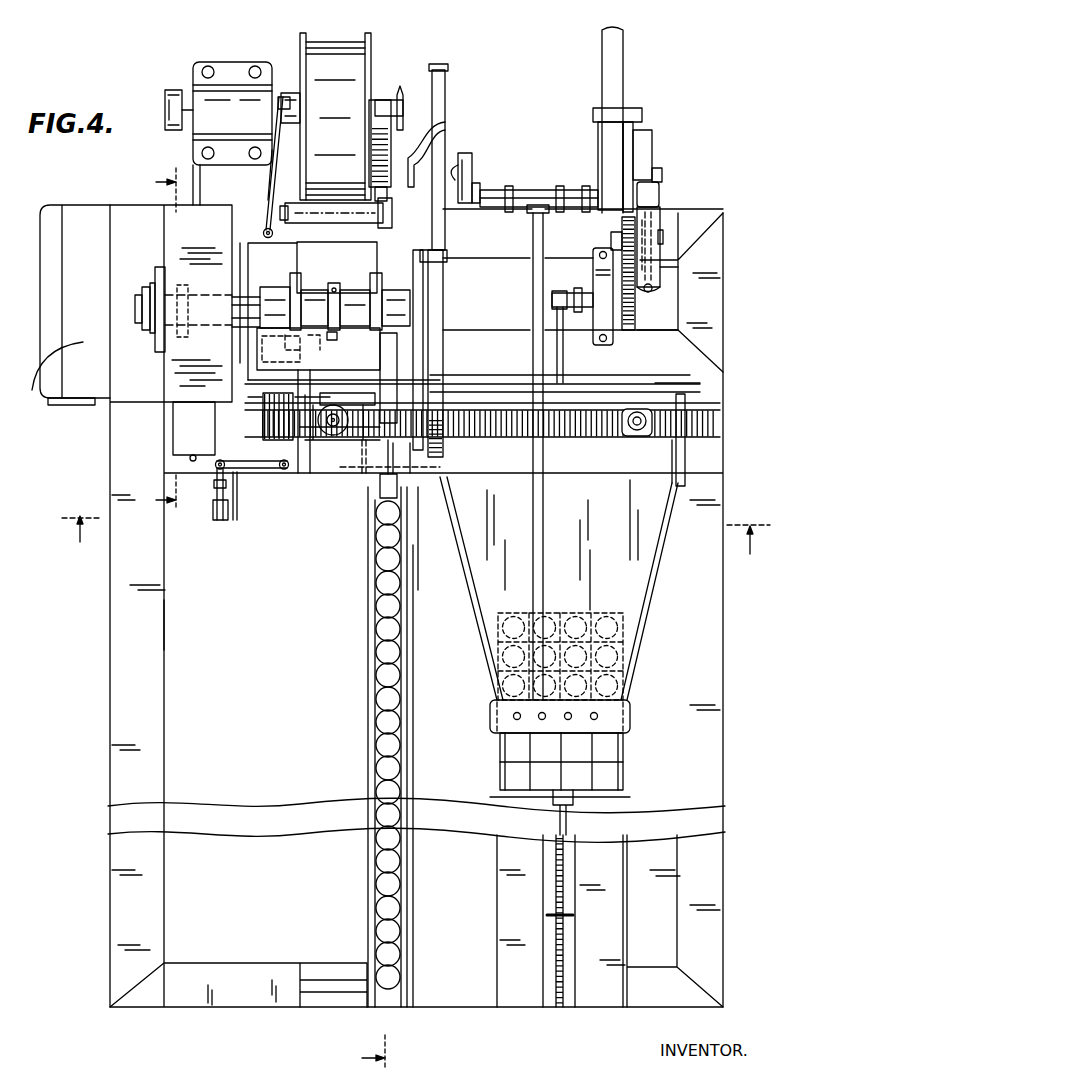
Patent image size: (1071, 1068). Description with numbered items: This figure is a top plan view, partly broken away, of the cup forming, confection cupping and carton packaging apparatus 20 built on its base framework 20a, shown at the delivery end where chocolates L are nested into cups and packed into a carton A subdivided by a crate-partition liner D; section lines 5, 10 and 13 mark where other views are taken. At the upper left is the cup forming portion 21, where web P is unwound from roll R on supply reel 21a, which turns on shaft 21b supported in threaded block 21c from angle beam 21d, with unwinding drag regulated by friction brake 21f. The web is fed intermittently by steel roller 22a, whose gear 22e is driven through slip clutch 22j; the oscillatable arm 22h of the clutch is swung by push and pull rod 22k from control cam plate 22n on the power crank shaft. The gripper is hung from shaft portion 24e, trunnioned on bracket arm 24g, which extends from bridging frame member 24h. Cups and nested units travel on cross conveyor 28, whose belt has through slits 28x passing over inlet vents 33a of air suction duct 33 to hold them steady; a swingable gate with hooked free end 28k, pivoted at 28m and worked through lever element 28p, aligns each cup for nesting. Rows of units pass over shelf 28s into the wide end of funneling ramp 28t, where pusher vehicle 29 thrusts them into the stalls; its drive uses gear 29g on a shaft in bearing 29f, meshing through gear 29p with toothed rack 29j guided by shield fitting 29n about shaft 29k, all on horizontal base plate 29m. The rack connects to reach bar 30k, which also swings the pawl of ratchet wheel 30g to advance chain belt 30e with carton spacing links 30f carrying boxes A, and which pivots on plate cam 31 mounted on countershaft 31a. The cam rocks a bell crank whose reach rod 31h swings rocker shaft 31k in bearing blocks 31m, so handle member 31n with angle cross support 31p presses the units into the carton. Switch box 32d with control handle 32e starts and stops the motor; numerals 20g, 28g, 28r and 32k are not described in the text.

The cup forming, confection cupping and carton packaging apparatus 20 is at (97, 204).
The base framework 20a is at (166, 628).
The frame bracket 20g is at (168, 410).
The cup forming portion 21 is at (277, 471).
The supply reel 21a is at (369, 78).
The shaft 21b is at (281, 97).
The threaded block 21c is at (202, 82).
The angle beam 21d is at (200, 197).
The friction brake 21f is at (268, 185).
The steel roller 22a is at (331, 232).
The gear 22e is at (386, 222).
The oscillatable arm 22h is at (448, 127).
The slip clutch 22j is at (380, 204).
The push and pull rod 22k is at (447, 88).
The control cam plate 22n is at (445, 246).
The shaft portion 24e is at (335, 472).
The bracket arm 24g is at (410, 397).
The bridging frame member 24h is at (355, 378).
The cross conveyor 28 is at (473, 442).
The link rod 28g is at (235, 522).
The hooked free end 28k is at (401, 485).
The gate pivot 28m is at (306, 486).
The lever element 28p is at (222, 522).
The link 28r is at (216, 486).
The shelf 28s is at (717, 475).
The funneling ramp 28t is at (648, 641).
The through slits 28x is at (592, 438).
The pusher vehicle 29 is at (723, 372).
The bearing 29f is at (590, 306).
The gear 29g is at (636, 318).
The toothed rack 29j is at (655, 149).
The shaft 29k is at (621, 242).
The horizontal base plate 29m is at (562, 272).
The guiding scabbard or shield fitting 29n is at (665, 268).
The gear 29p is at (690, 206).
The chain belt 30e is at (556, 879).
The carton spacing link 30f is at (553, 798).
The ratchet wheel 30g is at (645, 116).
The reach or connecting bar 30k is at (600, 158).
The plate cam 31 is at (602, 82).
The countershaft 31a is at (438, 170).
The reach rod 31h is at (472, 166).
The rocker shaft 31k is at (480, 195).
The bearing blocks 31m is at (561, 195).
The handle member 31n is at (543, 560).
The angle cross support 31p is at (488, 721).
The switch box 32d is at (8, 400).
The control handle 32e is at (95, 405).
The hatched block 32k is at (214, 432).
The air suction duct 33 is at (641, 407).
The inlet vents 33a is at (628, 410).
The roll R is at (340, 52).
The web P is at (358, 238).
The chocolate cherries L is at (380, 608).
The carton or box A is at (614, 752).
The crate-partition liner D is at (594, 770).
The section line 5 is at (416, 546).
The section line 10 is at (376, 459).
The section line 13 is at (172, 341).